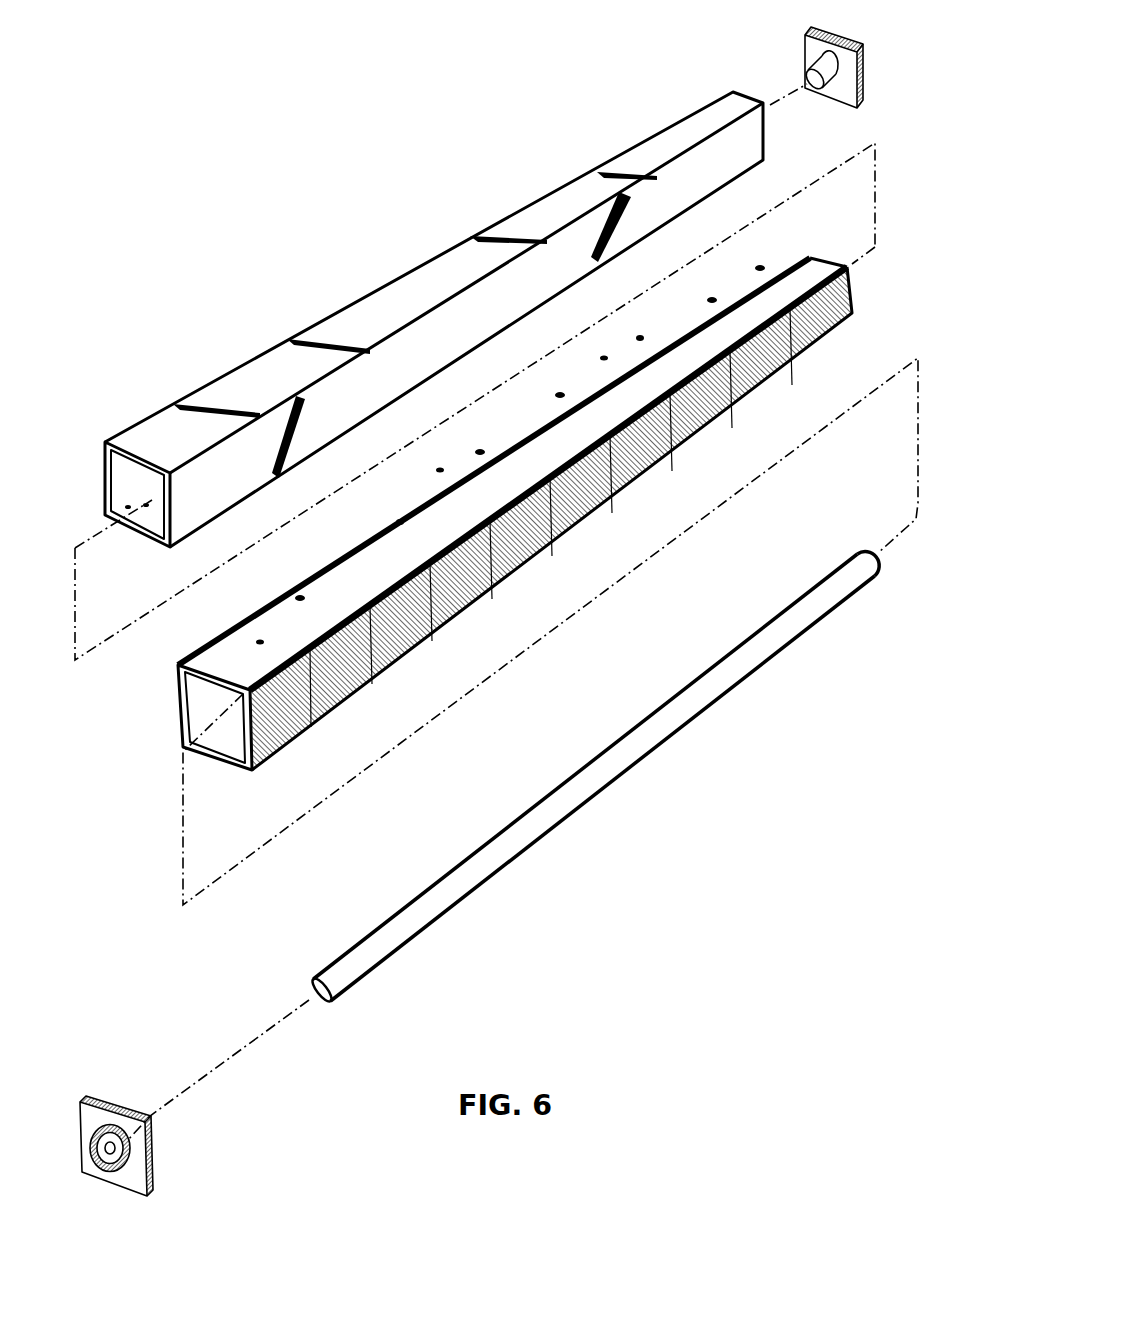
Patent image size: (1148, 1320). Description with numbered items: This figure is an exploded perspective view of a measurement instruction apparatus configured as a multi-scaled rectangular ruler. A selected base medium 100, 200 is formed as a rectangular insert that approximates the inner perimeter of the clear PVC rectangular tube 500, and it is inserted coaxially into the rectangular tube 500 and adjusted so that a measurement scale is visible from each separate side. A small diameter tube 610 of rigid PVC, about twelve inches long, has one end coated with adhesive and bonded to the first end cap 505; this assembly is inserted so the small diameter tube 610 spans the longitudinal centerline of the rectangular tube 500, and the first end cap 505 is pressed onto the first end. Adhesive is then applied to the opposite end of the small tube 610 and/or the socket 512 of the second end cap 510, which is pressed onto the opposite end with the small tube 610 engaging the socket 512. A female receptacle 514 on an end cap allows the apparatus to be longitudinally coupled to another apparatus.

The base medium 100 is at (567, 514).
The base medium 200 is at (800, 362).
The rectangular tube 500 is at (390, 308).
The first end cap 505 is at (178, 1124).
The second end cap 510 is at (824, 65).
The socket 512 is at (860, 108).
The female receptacle 514 is at (147, 1122).
The small diameter tube 610 is at (628, 775).